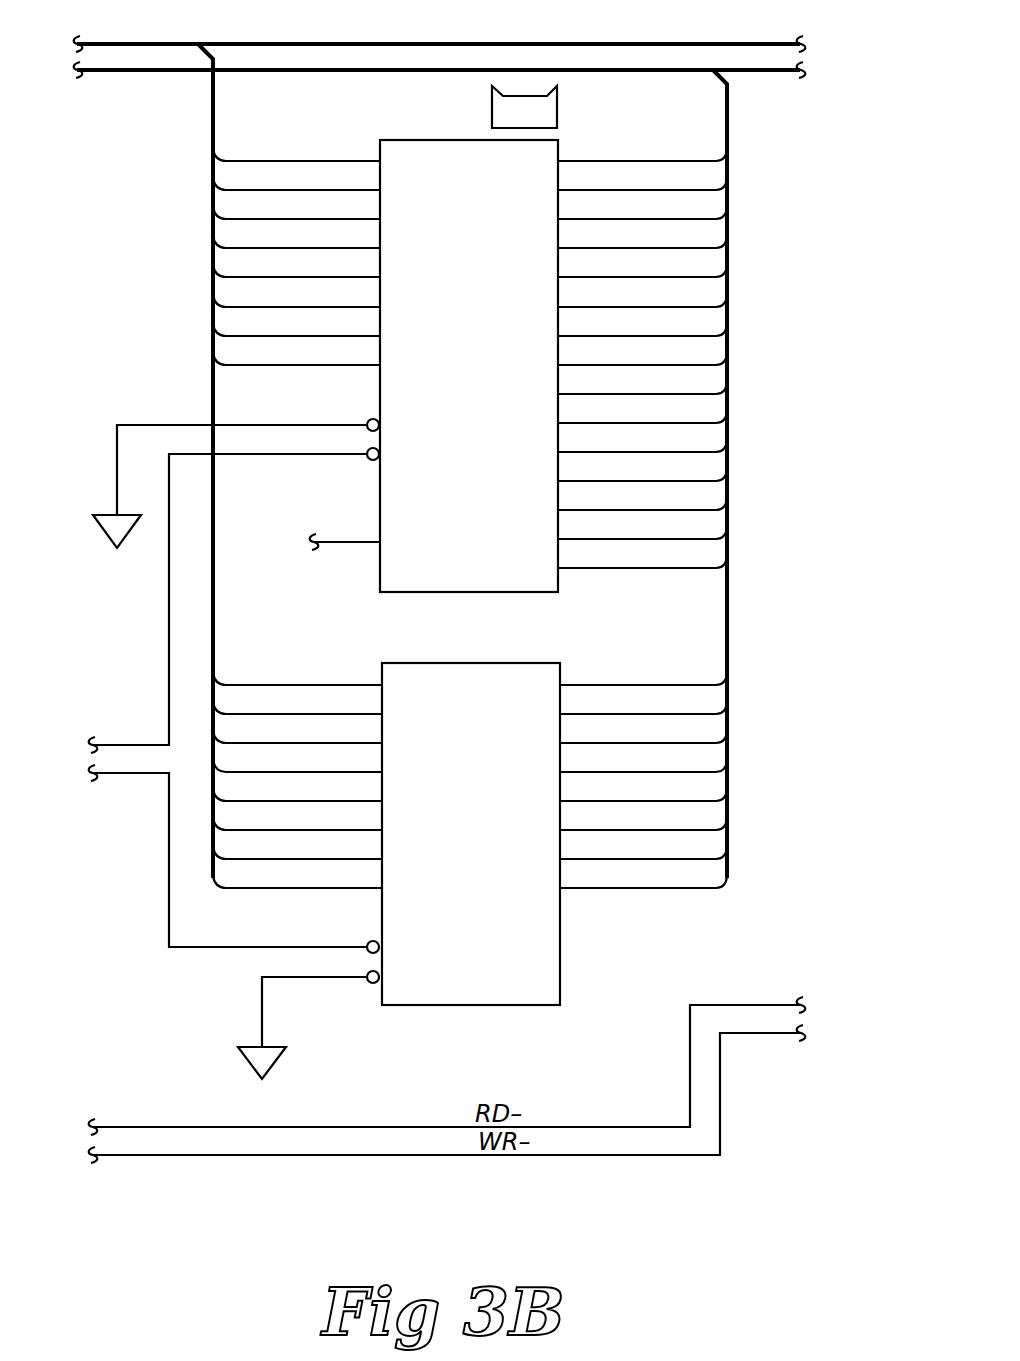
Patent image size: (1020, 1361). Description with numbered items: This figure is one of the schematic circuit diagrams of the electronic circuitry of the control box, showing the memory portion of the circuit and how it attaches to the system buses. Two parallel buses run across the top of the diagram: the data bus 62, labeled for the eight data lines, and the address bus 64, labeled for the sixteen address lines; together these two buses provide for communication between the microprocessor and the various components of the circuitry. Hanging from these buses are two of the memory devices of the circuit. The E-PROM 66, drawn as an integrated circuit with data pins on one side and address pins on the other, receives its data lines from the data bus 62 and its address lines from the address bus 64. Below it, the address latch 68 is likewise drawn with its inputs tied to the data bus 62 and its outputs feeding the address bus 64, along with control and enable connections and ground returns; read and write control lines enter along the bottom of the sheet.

The data bus 62 is at (437, 43).
The address bus 64 is at (512, 70).
The E-PROM 66 is at (402, 562).
The address latch 68 is at (543, 952).